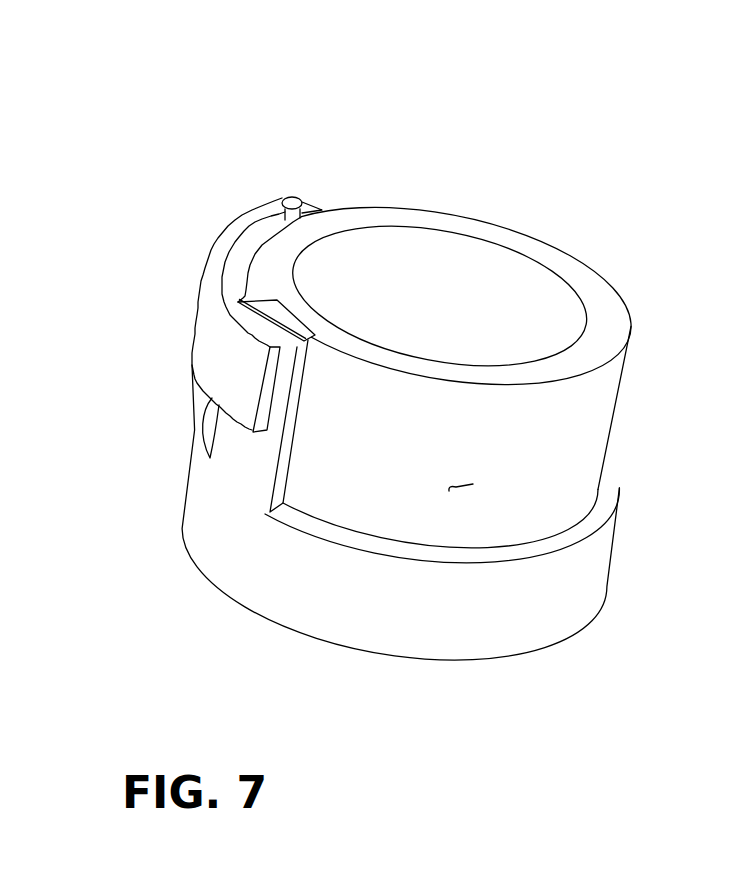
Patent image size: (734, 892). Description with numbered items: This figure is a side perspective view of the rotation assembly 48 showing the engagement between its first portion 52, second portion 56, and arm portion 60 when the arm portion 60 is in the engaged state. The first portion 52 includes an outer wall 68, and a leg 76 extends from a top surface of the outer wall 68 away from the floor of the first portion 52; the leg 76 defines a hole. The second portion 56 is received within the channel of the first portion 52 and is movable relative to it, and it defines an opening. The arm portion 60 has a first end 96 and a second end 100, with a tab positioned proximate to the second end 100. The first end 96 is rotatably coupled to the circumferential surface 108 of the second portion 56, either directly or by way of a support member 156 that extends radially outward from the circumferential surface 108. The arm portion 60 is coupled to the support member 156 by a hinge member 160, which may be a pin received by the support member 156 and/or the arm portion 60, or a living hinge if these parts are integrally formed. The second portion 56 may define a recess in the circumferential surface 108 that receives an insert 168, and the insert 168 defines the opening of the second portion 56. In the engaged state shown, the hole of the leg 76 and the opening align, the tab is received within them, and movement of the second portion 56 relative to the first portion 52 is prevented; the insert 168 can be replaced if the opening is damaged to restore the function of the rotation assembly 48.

The rotation assembly 48 is at (176, 153).
The first portion 52 is at (500, 668).
The second portion 56 is at (611, 270).
The arm portion 60 is at (194, 260).
The outer wall 68 is at (608, 497).
The leg 76 is at (216, 432).
The first end 96 is at (288, 196).
The second end 100 is at (268, 403).
The circumferential surface 108 is at (465, 489).
The support member 156 is at (322, 206).
The hinge member 160 is at (300, 195).
The insert 168 is at (302, 317).